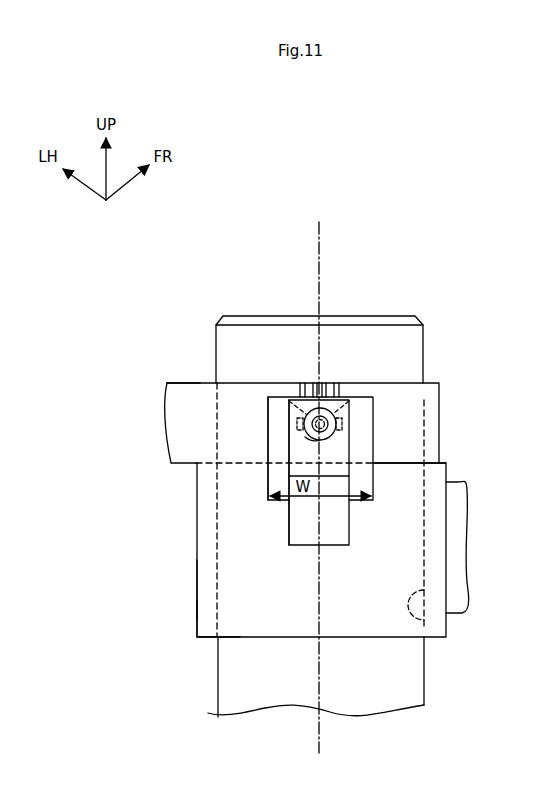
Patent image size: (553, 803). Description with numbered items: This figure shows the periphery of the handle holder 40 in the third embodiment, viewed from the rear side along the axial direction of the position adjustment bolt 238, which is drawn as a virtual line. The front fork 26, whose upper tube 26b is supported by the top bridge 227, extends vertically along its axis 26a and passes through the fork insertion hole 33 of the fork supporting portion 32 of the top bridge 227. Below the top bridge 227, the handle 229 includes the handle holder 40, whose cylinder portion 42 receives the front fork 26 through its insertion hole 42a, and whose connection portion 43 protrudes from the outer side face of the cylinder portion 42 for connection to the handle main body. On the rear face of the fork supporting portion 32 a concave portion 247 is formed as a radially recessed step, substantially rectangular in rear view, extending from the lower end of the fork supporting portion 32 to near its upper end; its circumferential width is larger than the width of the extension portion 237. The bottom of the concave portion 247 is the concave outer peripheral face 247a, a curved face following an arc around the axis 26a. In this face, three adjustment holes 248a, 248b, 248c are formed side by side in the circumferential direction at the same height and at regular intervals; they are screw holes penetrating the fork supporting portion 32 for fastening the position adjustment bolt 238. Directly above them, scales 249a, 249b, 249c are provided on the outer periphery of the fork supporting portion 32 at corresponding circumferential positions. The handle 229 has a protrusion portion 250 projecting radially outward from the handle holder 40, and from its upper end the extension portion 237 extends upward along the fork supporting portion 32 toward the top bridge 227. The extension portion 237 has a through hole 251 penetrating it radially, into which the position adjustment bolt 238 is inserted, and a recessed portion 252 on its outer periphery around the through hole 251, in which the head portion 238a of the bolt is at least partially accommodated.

The front fork 26 is at (427, 333).
The axis of front fork 26a is at (320, 237).
The upper tube 26b is at (427, 688).
The top bridge 227 is at (184, 380).
The fork insertion hole 33 is at (420, 400).
The fork supporting portion 32 is at (442, 410).
The protrusion portion 250 is at (349, 511).
The concave portion 247 is at (265, 415).
The concave outer peripheral face 247a is at (287, 432).
The through hole 251 is at (311, 439).
The recessed portion 252 is at (336, 422).
The extension portion 237 is at (331, 432).
The position adjustment bolt 238 is at (326, 437).
The head portion 238a is at (322, 440).
The adjustment hole 248a is at (288, 400).
The adjustment hole 248b is at (312, 396).
The adjustment hole 248c is at (333, 416).
The scale 249a is at (305, 396).
The scale 249b is at (326, 396).
The scale 249c is at (335, 396).
The handle holder 40 is at (197, 605).
The handle 229 is at (194, 587).
The cylinder portion 42 is at (207, 621).
The insertion hole 42a is at (423, 620).
The connection portion 43 is at (455, 592).